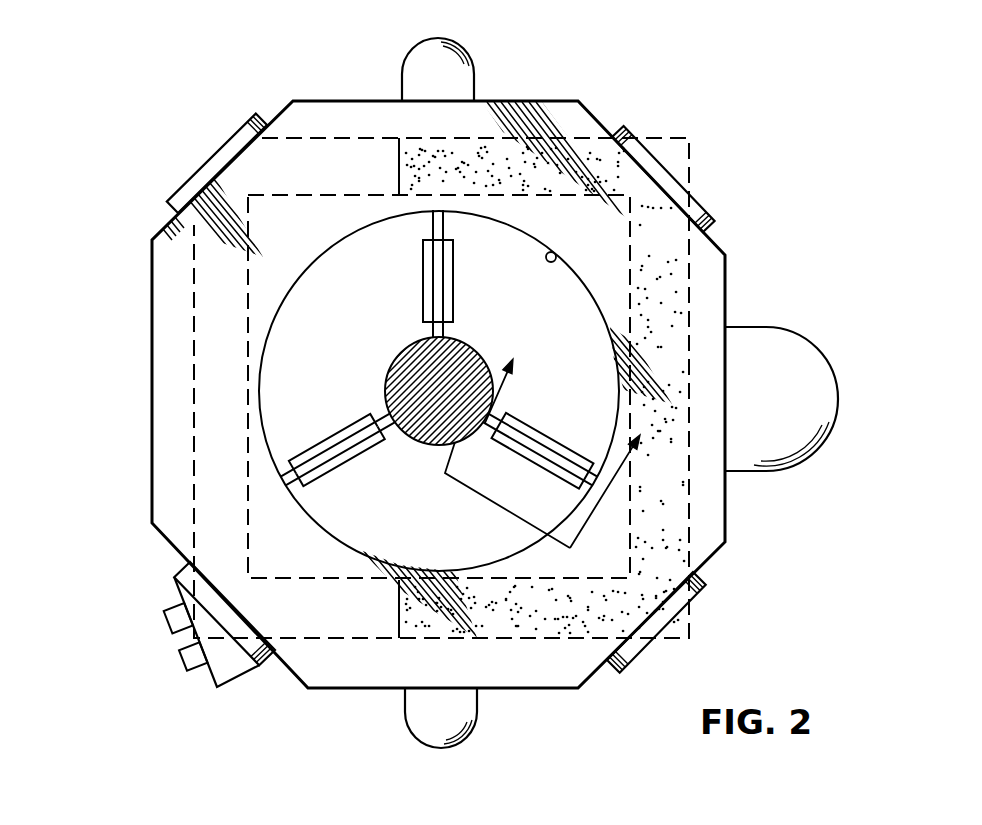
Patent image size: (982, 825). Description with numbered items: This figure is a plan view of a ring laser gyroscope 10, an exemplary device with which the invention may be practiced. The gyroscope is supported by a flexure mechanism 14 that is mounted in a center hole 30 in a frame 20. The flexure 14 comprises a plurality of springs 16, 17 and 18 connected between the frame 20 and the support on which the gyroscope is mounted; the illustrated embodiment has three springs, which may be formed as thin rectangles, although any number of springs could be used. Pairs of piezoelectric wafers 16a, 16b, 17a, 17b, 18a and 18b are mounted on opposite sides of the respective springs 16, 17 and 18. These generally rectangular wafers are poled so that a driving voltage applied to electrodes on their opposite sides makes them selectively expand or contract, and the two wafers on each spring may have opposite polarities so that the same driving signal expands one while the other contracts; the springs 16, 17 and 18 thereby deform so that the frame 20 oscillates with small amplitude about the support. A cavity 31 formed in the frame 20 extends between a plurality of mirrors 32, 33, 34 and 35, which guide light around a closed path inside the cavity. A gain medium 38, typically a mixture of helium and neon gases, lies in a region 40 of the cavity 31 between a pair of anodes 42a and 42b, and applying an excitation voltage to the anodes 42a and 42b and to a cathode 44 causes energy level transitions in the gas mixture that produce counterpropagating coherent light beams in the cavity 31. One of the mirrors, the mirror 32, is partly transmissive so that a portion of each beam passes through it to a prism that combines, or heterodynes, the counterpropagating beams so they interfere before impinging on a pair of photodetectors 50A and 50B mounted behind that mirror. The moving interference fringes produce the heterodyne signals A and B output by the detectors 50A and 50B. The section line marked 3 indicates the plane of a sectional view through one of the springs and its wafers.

The ring laser gyroscope 10 is at (118, 225).
The flexure mechanism 14 is at (226, 370).
The spring 16 is at (437, 273).
The piezoelectric wafer 16a is at (422, 276).
The piezoelectric wafer 16b is at (455, 266).
The spring 17 is at (514, 444).
The piezoelectric wafer 17a is at (548, 432).
The piezoelectric wafer 17b is at (525, 450).
The spring 18 is at (338, 430).
The piezoelectric wafer 18a is at (345, 458).
The piezoelectric wafer 18b is at (335, 432).
The frame 20 is at (150, 322).
The center hole 30 is at (552, 255).
The cavity 31 is at (355, 123).
The mirror 32 is at (175, 572).
The mirror 33 is at (228, 130).
The mirror 34 is at (663, 158).
The mirror 35 is at (693, 607).
The gain medium 38 is at (676, 488).
The region 40 is at (713, 269).
The anode 42a is at (472, 60).
The anode 42b is at (405, 712).
The cathode 44 is at (800, 338).
The photodetector 50A is at (160, 610).
The photodetector 50B is at (178, 660).
The section line 3- 3 is at (570, 441).